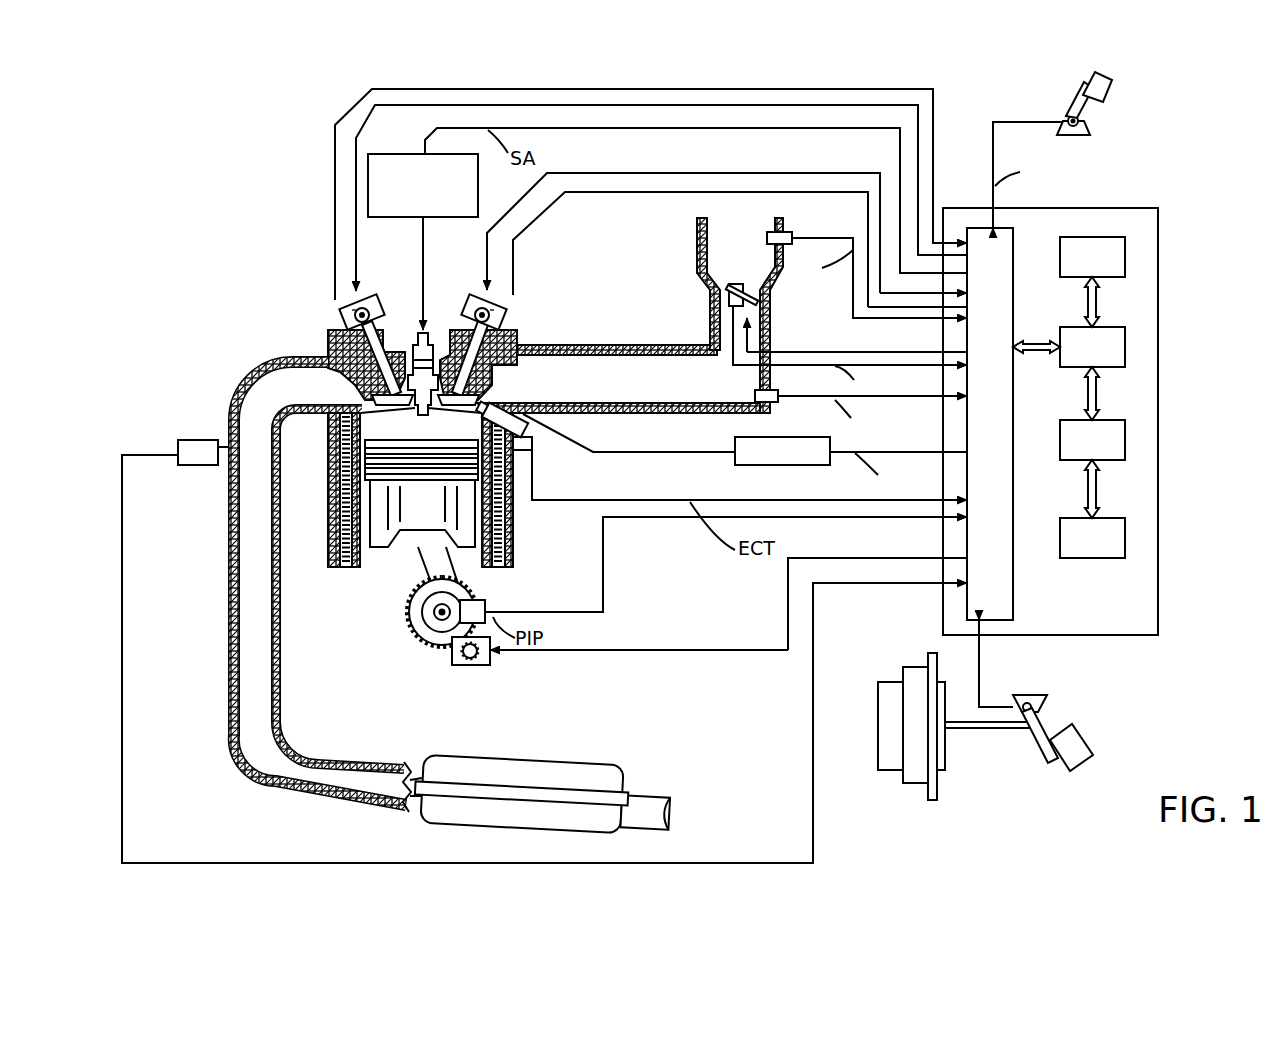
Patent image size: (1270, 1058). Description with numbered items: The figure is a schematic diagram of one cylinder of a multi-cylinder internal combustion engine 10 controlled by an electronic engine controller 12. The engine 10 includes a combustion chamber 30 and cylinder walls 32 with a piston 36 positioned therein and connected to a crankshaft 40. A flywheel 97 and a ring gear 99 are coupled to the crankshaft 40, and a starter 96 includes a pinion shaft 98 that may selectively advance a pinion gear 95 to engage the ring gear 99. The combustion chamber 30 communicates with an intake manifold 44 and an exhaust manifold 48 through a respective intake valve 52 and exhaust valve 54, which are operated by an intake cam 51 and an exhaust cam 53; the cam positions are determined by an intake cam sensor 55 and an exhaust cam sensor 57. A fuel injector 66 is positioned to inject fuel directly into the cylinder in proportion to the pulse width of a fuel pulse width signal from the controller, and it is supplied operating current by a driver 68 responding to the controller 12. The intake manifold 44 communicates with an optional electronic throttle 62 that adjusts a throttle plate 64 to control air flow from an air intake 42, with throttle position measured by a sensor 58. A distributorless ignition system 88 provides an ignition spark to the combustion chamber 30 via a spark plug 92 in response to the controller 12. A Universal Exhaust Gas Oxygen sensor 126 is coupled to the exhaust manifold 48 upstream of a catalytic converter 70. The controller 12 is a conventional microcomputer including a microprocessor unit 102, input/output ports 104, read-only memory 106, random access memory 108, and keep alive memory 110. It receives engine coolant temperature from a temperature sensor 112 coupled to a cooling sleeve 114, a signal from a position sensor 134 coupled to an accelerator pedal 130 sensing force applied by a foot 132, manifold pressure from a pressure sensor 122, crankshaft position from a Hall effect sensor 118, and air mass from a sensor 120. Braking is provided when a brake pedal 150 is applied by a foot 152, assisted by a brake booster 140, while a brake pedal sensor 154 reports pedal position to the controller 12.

The internal combustion engine 10 is at (262, 285).
The electronic engine controller 12 is at (1145, 208).
The combustion chamber 30 is at (345, 515).
The cylinder walls 32 is at (365, 570).
The piston 36 is at (403, 560).
The crankshaft 40 is at (425, 635).
The air intake 42 is at (740, 315).
The intake manifold 44 is at (623, 379).
The exhaust manifold 48 is at (328, 587).
The intake cam 51 is at (478, 296).
The intake valve 52 is at (470, 389).
The exhaust cam 53 is at (362, 300).
The exhaust valve 54 is at (325, 355).
The intake cam sensor 55 is at (492, 316).
The exhaust cam sensor 57 is at (347, 318).
The throttle position sensor 58 is at (715, 308).
The electronic throttle 62 is at (755, 297).
The throttle plate 64 is at (728, 292).
The fuel injector 66 is at (525, 428).
The driver 68 is at (745, 465).
The catalytic converter 70 is at (440, 760).
The distributorless ignition system 88 is at (380, 154).
The spark plug 92 is at (432, 335).
The pinion gear 95 is at (472, 666).
The starter 96 is at (485, 665).
The flywheel 97 is at (405, 620).
The pinion shaft 98 is at (466, 662).
The ring gear 99 is at (435, 655).
The microprocessor unit 102 is at (1125, 345).
The input/output ports 104 is at (1013, 236).
The read-only memory 106 is at (1125, 255).
The random access memory 108 is at (1125, 440).
The keep alive memory 110 is at (1125, 535).
The temperature sensor 112 is at (532, 452).
The cooling sleeve 114 is at (497, 518).
The Hall effect sensor 118 is at (485, 600).
The air mass sensor 120 is at (790, 232).
The pressure sensor 122 is at (778, 402).
The Universal Exhaust Gas Oxygen sensor 126 is at (178, 447).
The accelerator pedal 130 is at (1055, 98).
The foot 132 is at (1104, 90).
The position sensor 134 is at (1090, 122).
The brake booster 140 is at (880, 765).
The brake pedal 150 is at (1050, 755).
The foot 152 is at (1085, 735).
The brake pedal sensor 154 is at (1018, 706).